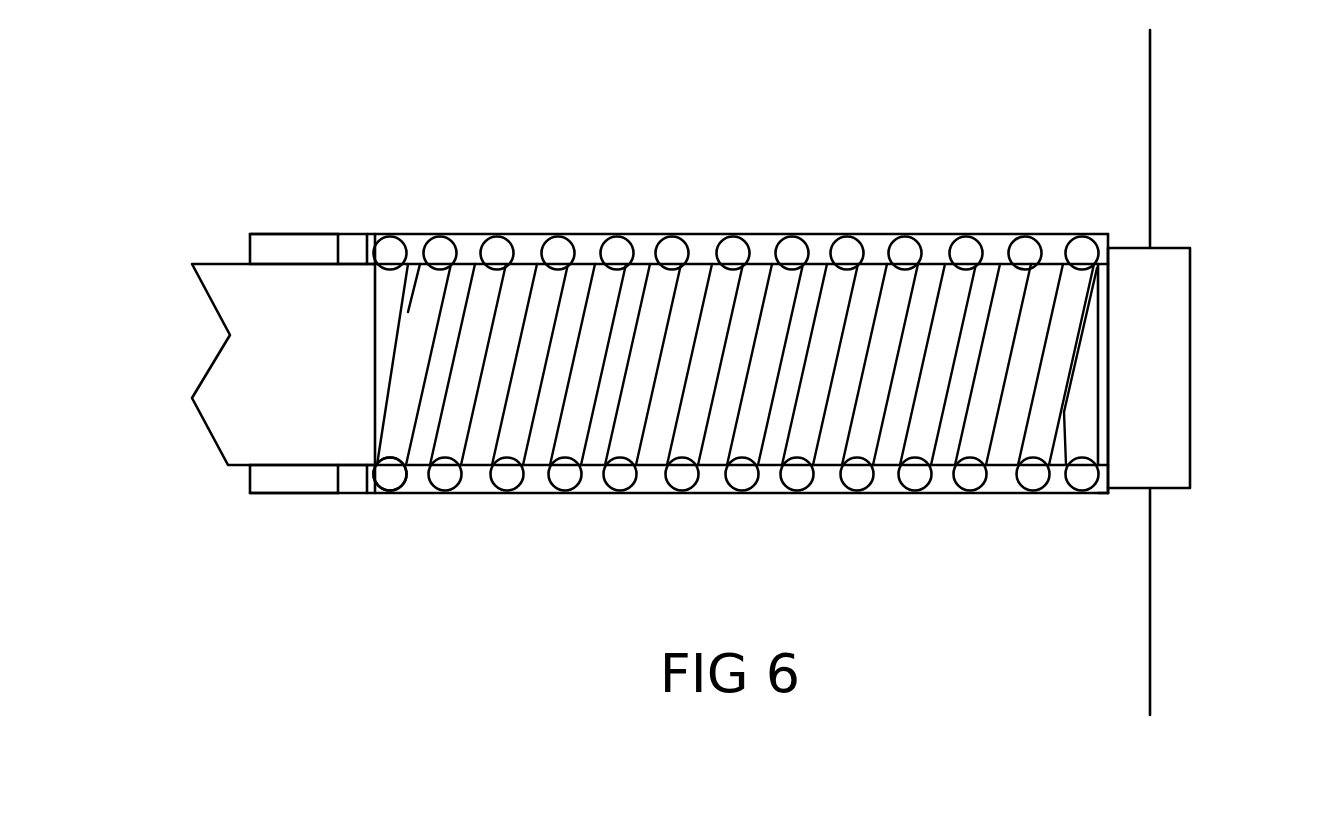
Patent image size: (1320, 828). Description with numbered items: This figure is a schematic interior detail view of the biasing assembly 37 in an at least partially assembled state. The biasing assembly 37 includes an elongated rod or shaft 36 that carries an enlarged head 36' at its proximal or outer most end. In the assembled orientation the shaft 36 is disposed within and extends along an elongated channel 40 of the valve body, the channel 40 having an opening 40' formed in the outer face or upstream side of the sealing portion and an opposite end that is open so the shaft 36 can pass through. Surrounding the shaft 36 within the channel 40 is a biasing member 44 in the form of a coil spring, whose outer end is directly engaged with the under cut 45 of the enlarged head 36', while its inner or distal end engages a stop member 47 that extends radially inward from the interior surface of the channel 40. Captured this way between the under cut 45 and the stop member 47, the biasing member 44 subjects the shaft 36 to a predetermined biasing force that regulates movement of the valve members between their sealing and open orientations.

The shaft 36 is at (283, 460).
The enlarged head 36' is at (1204, 348).
The biasing assembly 37 is at (713, 316).
The channel 40 is at (679, 413).
The opening 40' is at (1182, 548).
The biasing member 44 is at (740, 307).
The under cut 45 is at (1102, 292).
The stop member 47 is at (355, 243).